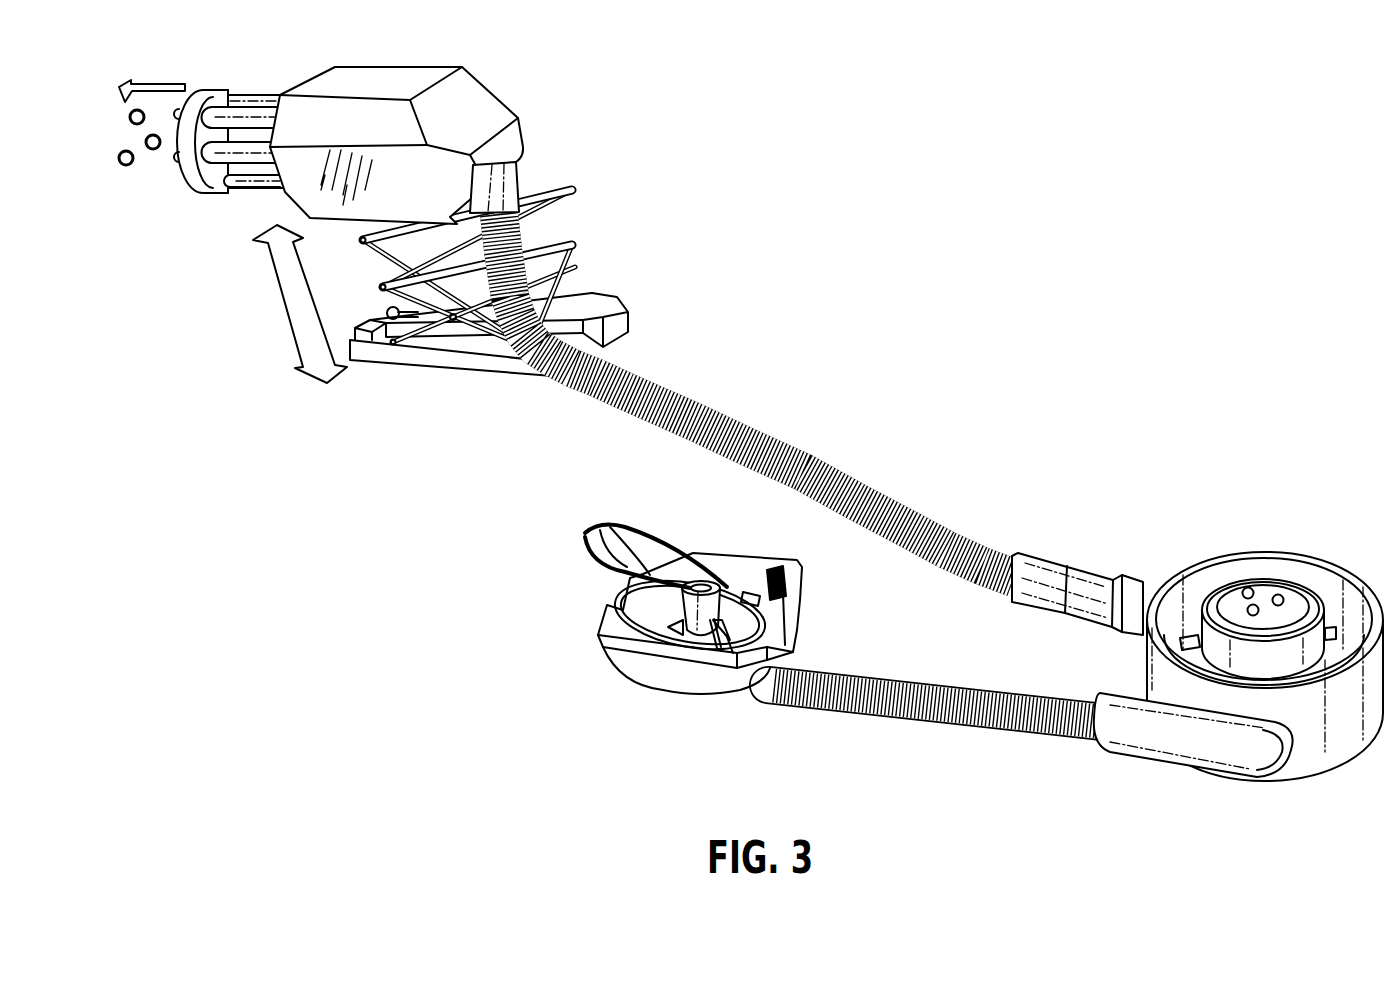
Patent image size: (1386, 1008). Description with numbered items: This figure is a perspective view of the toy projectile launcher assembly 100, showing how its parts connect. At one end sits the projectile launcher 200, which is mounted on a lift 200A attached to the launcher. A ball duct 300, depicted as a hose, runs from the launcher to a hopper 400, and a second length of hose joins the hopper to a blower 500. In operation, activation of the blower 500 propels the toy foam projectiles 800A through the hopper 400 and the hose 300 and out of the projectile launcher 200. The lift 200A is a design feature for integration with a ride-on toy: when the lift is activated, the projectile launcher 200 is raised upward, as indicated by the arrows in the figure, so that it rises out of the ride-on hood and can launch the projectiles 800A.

The projectile launcher assembly 100 is at (920, 355).
The projectile launcher 200 is at (496, 112).
The lift 200A is at (568, 188).
The ball duct 300 is at (889, 540).
The hopper 400 is at (1270, 597).
The blower 500 is at (645, 654).
The toy foam projectiles 800A is at (133, 168).